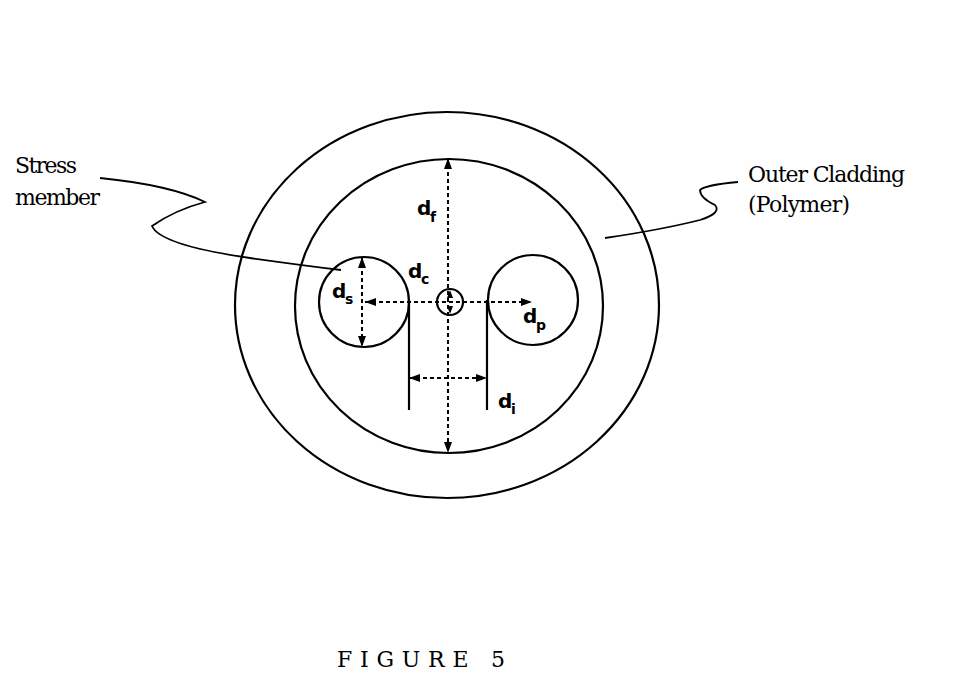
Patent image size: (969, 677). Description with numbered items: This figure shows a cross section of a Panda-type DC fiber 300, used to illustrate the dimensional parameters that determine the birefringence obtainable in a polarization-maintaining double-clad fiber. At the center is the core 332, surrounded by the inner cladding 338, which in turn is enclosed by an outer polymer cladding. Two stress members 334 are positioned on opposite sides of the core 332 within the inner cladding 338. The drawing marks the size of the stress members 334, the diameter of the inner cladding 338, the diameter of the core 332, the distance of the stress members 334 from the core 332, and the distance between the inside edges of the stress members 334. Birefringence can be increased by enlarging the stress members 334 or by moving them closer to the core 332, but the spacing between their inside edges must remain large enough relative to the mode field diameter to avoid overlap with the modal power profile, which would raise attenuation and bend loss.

The Panda-type DC fiber 300 is at (590, 111).
The core 332 is at (441, 308).
The stress members 334 is at (385, 277).
The inner cladding 338 is at (565, 367).